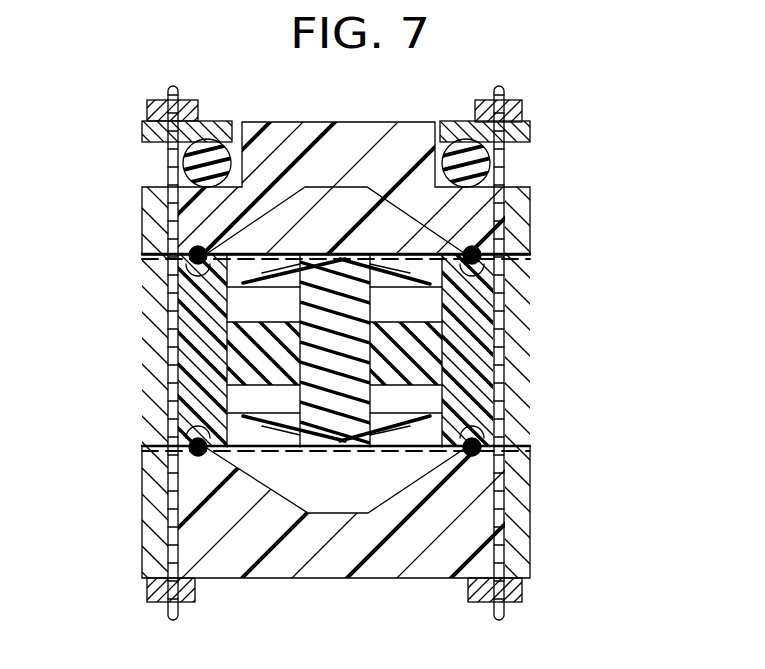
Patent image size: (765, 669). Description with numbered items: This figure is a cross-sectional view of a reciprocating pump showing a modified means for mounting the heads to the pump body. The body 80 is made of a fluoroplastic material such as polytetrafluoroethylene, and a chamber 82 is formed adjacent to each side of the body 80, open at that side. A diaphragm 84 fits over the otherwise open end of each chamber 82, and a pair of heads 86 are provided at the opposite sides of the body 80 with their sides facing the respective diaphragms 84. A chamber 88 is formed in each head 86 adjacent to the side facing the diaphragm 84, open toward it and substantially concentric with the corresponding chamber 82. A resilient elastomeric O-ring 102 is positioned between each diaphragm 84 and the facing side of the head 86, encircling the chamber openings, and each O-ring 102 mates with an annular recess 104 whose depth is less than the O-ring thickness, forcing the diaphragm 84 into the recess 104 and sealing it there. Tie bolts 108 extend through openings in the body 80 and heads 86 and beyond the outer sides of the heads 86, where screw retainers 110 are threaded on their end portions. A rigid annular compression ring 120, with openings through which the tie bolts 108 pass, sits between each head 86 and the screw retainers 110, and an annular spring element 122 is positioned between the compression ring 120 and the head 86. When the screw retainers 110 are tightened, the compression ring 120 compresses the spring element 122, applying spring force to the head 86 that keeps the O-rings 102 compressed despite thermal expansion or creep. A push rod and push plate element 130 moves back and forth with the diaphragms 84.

The body 80 is at (455, 340).
The chamber 82 is at (472, 245).
The diaphragm 84 is at (412, 252).
The head 86 is at (336, 150).
The chamber 88 is at (360, 212).
The O-ring 102 is at (485, 250).
The annular recess 104 is at (462, 292).
The tie bolt 108 is at (515, 410).
The screw retainer 110 is at (183, 100).
The compression ring 120 is at (213, 130).
The annular spring element 122 is at (183, 157).
The push rod and push plate element 130 is at (332, 367).